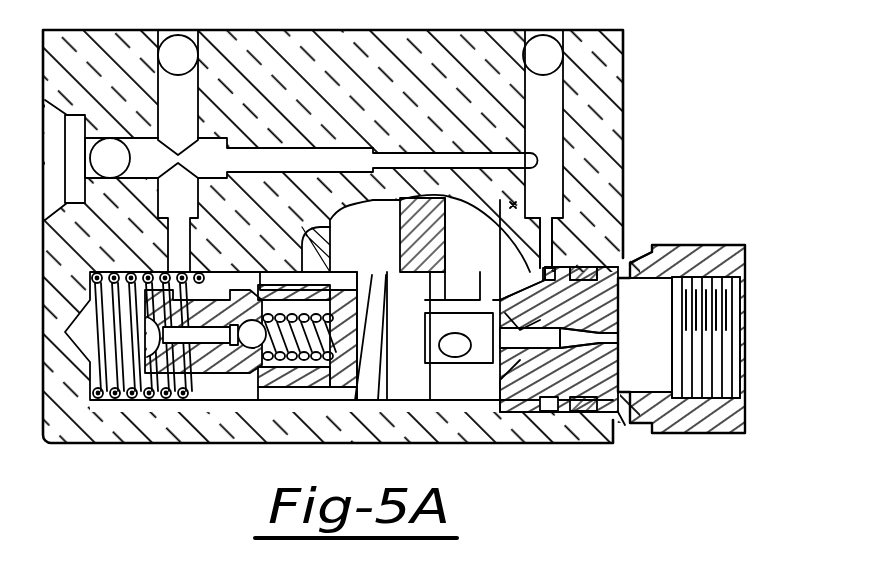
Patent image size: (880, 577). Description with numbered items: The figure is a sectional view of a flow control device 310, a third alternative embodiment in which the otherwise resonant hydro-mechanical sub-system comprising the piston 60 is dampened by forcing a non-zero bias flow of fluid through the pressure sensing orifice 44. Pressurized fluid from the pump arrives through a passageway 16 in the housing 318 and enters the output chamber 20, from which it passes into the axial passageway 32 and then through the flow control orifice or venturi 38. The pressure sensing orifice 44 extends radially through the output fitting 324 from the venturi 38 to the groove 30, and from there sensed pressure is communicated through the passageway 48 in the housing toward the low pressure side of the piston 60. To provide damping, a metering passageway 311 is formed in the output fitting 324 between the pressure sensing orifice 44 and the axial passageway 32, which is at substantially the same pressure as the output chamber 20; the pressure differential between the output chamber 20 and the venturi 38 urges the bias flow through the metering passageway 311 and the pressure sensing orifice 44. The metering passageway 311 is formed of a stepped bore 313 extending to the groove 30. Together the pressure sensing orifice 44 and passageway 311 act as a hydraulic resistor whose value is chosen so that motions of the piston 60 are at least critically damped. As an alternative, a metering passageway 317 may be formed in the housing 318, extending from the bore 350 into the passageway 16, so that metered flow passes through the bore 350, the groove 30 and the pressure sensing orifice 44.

The passageway 16 is at (440, 318).
The output chamber 20 is at (462, 290).
The circumferential groove 30 is at (565, 412).
The axial passageway 32 is at (485, 385).
The flow control orifice or venturi 38 is at (583, 337).
The pressure sensing orifice 44 is at (607, 300).
The passageway 48 is at (615, 218).
The piston 60 is at (378, 385).
The flow control device 310 is at (165, 452).
The metering passageway 311 is at (520, 410).
The stepped bore 313 is at (625, 425).
The alternate metering passageway 317 is at (578, 197).
The housing 318 is at (630, 110).
The output fitting 324 is at (745, 415).
The bore 350 is at (553, 176).